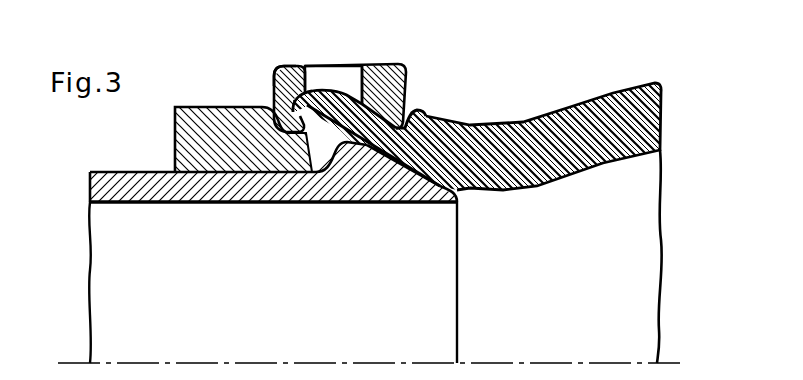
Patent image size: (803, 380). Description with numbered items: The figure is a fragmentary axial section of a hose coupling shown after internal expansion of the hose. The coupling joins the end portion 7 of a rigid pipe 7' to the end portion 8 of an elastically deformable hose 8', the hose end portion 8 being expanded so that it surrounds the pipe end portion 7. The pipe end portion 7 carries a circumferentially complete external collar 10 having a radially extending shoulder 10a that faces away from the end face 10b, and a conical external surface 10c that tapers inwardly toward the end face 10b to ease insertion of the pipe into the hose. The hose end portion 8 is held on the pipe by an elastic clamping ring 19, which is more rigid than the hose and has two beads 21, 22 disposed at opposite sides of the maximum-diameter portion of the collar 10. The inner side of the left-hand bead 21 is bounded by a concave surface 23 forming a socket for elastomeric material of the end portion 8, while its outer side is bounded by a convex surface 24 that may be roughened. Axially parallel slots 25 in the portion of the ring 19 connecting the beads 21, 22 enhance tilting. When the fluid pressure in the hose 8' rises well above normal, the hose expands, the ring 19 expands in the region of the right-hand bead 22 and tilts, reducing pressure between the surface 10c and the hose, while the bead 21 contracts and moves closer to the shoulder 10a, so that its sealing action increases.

The end portion of the pipe 7 is at (203, 167).
The rigid tubular member (pipe) 7' is at (60, 282).
The end portion of the hose 8 is at (477, 122).
The hose 8' is at (677, 256).
The collar 10 is at (351, 147).
The shoulder 10a is at (328, 165).
The end face 10b is at (457, 283).
The conical external surface 10c is at (444, 192).
The clamping ring 19 is at (297, 58).
The left-hand bead 21 is at (214, 112).
The right-hand bead 22 is at (420, 116).
The concave surface 23 is at (280, 68).
The convex surface 24 is at (268, 110).
The slots 25 is at (338, 70).